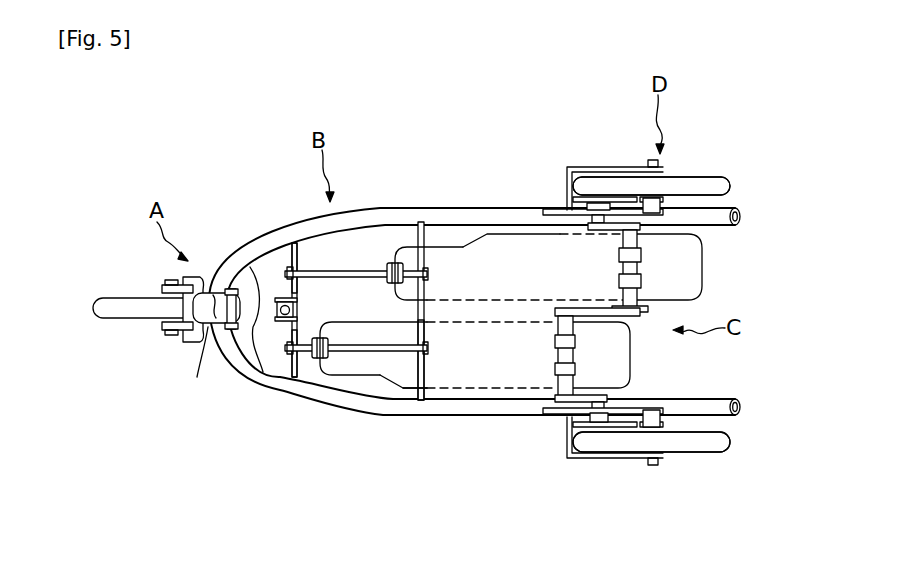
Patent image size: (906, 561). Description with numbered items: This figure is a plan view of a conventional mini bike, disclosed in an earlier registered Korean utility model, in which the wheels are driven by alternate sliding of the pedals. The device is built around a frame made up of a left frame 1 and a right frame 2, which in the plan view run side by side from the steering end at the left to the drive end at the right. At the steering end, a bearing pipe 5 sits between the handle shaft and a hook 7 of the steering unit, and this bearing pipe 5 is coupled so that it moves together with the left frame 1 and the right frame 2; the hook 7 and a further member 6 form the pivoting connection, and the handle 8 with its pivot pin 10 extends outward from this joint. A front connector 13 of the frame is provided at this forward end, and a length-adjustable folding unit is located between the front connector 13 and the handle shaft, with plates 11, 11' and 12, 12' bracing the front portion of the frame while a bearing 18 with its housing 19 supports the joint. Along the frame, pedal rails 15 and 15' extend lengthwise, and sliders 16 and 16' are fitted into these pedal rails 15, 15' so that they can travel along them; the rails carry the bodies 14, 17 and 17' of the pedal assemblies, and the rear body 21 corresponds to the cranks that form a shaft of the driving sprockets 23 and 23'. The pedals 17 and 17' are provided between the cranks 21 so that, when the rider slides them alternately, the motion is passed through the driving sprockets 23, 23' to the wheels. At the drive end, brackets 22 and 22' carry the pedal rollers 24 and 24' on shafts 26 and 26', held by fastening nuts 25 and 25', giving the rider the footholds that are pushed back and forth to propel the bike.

The left frame 1 is at (510, 209).
The right frame 2 is at (510, 412).
The bearing pipe 5 is at (212, 330).
The hinge plate 6 is at (252, 333).
The hook 7 is at (185, 337).
The handle bar 8 is at (125, 306).
The pivot pin 10 is at (233, 290).
The support plate 11 is at (276, 277).
The support plate 11' is at (276, 381).
The mounting plate 12 is at (423, 275).
The mounting plate 12' is at (435, 387).
The front connector 13 is at (295, 290).
The roller body 14 is at (413, 318).
The pedal rail 15 is at (356, 215).
The pedal rail 15' is at (356, 395).
The slider 16 is at (388, 226).
The slider 16' is at (310, 399).
The pedal 17 is at (548, 225).
The pedal 17' is at (447, 429).
The bearing 18 is at (252, 231).
The bearing housing 19 is at (276, 308).
The crank 21 is at (577, 350).
The L-shaped bracket 22 is at (599, 167).
The L-shaped bracket 22' is at (599, 459).
The driving sprocket 23 is at (612, 153).
The driving sprocket 23' is at (612, 473).
The pedal roller 24 is at (651, 159).
The pedal roller 24' is at (651, 472).
The fastening nut 25 is at (608, 165).
The fastening nut 25' is at (614, 462).
The roller shaft 26 is at (656, 144).
The roller shaft 26' is at (660, 483).